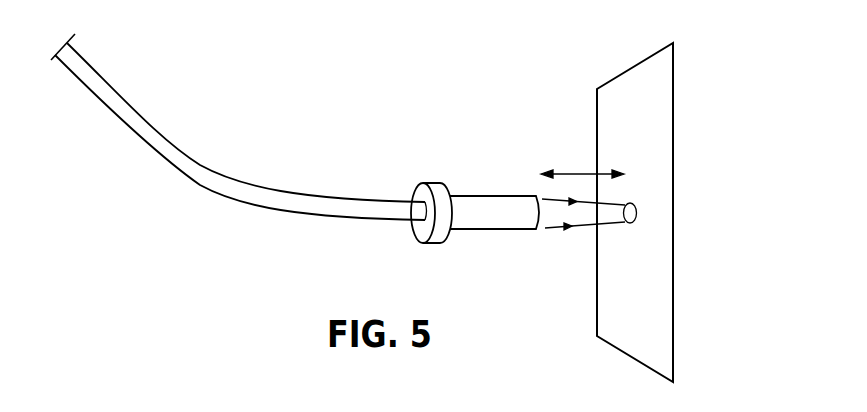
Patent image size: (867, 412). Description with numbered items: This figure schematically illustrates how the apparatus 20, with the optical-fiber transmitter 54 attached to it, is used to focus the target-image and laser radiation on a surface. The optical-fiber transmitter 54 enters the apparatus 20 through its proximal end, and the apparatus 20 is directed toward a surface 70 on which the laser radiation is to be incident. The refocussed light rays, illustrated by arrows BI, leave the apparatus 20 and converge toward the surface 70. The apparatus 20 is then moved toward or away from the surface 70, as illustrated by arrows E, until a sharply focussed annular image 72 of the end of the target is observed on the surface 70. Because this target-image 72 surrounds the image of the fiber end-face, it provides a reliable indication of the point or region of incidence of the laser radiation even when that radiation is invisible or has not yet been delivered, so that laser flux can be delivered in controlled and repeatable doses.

The apparatus 20 is at (478, 238).
The optical-fiber transmitter 54 is at (395, 209).
The surface 70 is at (635, 63).
The annular image 72 is at (637, 212).
The refocussed visible light rays BI is at (558, 198).
The arrows E is at (580, 172).